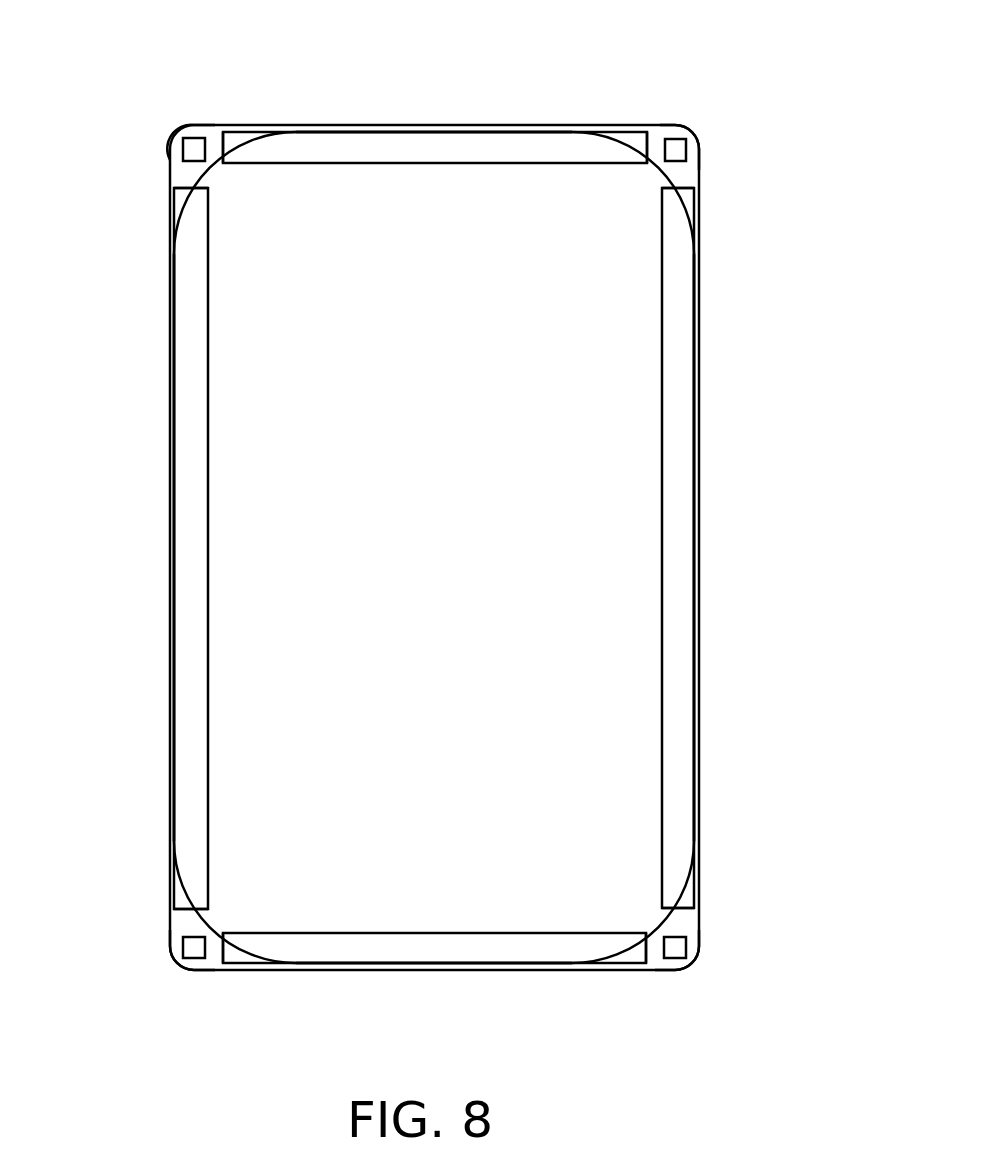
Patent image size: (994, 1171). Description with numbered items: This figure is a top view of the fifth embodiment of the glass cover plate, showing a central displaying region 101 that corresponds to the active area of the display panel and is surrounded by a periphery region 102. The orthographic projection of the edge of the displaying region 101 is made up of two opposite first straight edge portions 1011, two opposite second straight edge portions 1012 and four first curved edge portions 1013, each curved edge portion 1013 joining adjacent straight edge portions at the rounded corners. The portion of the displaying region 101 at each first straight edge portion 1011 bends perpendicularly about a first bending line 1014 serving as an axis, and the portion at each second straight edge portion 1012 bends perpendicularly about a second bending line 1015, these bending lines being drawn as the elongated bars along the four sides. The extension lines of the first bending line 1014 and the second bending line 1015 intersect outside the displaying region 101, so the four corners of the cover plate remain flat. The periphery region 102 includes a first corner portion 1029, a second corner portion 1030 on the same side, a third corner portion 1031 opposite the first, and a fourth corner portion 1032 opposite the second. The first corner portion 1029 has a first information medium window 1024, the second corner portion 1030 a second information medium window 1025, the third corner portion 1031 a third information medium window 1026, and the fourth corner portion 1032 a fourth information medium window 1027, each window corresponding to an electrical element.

The displaying region 101 is at (408, 147).
The periphery region 102 is at (556, 128).
The first straight edge portion 1011 is at (478, 130).
The second straight edge portion 1012 is at (173, 398).
The first curved edge portion 1013 is at (223, 160).
The first bending line 1014 is at (365, 163).
The second bending line 1015 is at (658, 293).
The first information medium window 1024 is at (675, 140).
The second information medium window 1025 is at (187, 135).
The third information medium window 1026 is at (183, 945).
The fourth information medium window 1027 is at (686, 947).
The first corner portion 1029 is at (699, 152).
The second corner portion 1030 is at (202, 118).
The third corner portion 1031 is at (180, 974).
The fourth corner portion 1032 is at (673, 979).